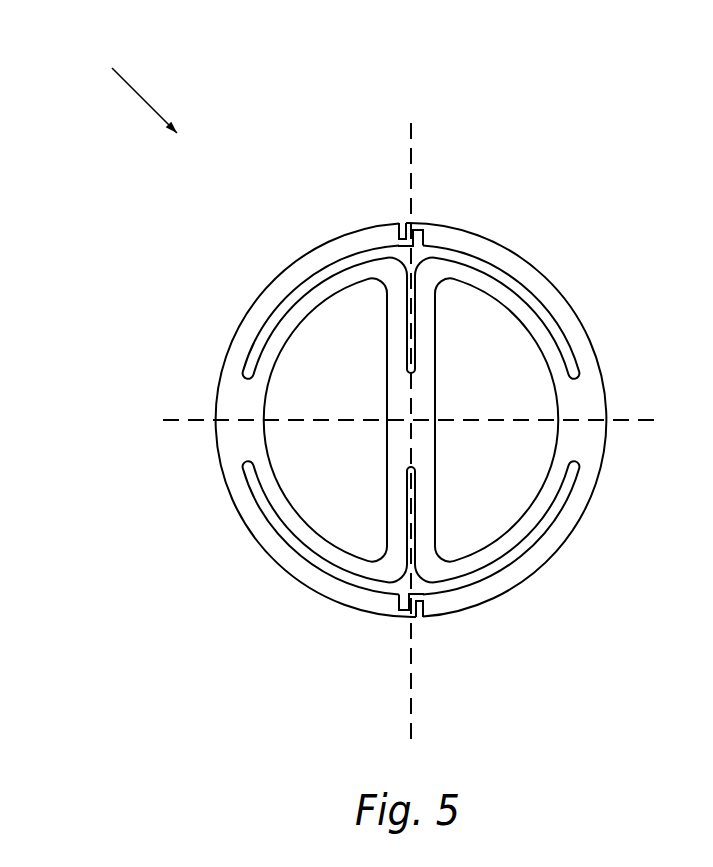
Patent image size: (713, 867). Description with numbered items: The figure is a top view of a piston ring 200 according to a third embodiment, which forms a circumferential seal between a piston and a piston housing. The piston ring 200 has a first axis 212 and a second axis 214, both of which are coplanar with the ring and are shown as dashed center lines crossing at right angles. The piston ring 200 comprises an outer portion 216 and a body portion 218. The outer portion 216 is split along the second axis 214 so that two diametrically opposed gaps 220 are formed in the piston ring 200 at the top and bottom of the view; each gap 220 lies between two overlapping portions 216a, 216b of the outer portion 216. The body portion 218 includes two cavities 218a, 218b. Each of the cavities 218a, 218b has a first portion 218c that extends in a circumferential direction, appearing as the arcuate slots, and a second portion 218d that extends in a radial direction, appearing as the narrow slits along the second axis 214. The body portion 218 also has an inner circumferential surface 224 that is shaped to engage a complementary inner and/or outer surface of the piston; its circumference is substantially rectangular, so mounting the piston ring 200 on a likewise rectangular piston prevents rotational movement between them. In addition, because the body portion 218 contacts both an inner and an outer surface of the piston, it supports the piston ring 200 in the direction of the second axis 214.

The piston ring 200 is at (125, 84).
The first axis 212 is at (192, 420).
The second axis 214 is at (410, 150).
The outer portion 216 is at (263, 290).
The overlapping portion 216a is at (423, 226).
The overlapping portion 216b is at (399, 230).
The body portion 218 is at (291, 520).
The cavity 218a is at (470, 257).
The cavity 218b is at (423, 592).
The first portion of cavity 218c is at (550, 318).
The second portion of cavity 218d is at (411, 352).
The gap 220 is at (409, 222).
The inner circumferential surface 224 is at (328, 293).